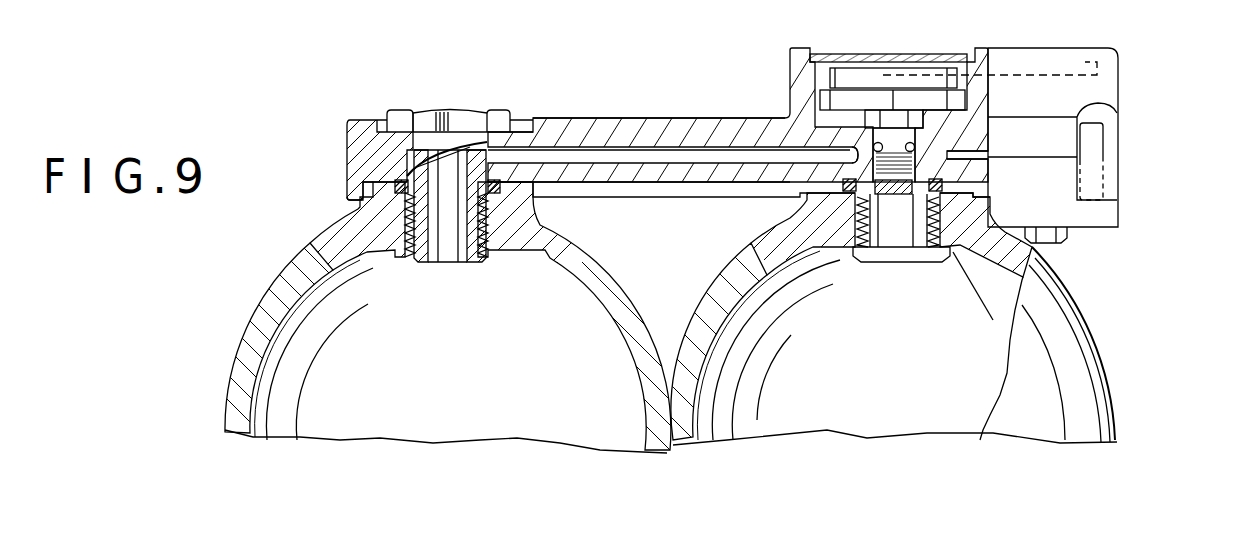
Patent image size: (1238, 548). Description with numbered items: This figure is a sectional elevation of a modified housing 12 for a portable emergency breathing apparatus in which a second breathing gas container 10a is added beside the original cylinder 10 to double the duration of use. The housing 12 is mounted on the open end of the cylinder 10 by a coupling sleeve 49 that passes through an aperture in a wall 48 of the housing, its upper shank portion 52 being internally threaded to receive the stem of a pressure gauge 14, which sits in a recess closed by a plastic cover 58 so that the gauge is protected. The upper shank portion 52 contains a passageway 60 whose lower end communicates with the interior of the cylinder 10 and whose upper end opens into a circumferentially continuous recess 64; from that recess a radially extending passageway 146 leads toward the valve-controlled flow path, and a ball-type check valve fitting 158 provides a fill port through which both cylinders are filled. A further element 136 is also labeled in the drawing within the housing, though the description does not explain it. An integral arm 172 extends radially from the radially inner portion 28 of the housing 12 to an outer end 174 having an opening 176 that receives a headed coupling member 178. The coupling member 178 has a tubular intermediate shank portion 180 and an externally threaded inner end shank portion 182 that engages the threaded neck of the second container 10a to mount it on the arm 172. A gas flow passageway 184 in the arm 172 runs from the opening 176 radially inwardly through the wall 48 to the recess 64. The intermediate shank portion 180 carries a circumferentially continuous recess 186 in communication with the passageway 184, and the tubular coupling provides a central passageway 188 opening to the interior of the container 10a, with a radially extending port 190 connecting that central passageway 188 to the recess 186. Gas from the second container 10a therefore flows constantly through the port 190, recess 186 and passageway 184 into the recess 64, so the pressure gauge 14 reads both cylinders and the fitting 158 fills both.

The cylinder 10 is at (1118, 290).
The second breathing gas container 10a is at (260, 273).
The housing 12 is at (1132, 43).
The pressure gauge 14 is at (950, 54).
The radially inner portion 28 is at (775, 74).
The wall 48 is at (793, 191).
The coupling sleeve 49 is at (950, 120).
The upper shank portion 52 is at (865, 170).
The plastic cover 58 is at (835, 56).
The passageway 60 is at (928, 183).
The recess 64 is at (853, 155).
The hidden passage 136 is at (1087, 62).
The radially extending passageway 146 is at (970, 155).
The ball-type check valve fitting 158 is at (1120, 131).
The integral arm 172 is at (613, 108).
The outer end 174 is at (358, 130).
The opening 176 is at (403, 124).
The headed coupling member 178 is at (440, 98).
The tubular intermediate shank portion 180 is at (470, 140).
The externally threaded inner end shank portion 182 is at (471, 262).
The gas flow passageway 184 is at (687, 157).
The recess 186 is at (422, 147).
The central passageway 188 is at (427, 260).
The radially extending port 190 is at (458, 150).